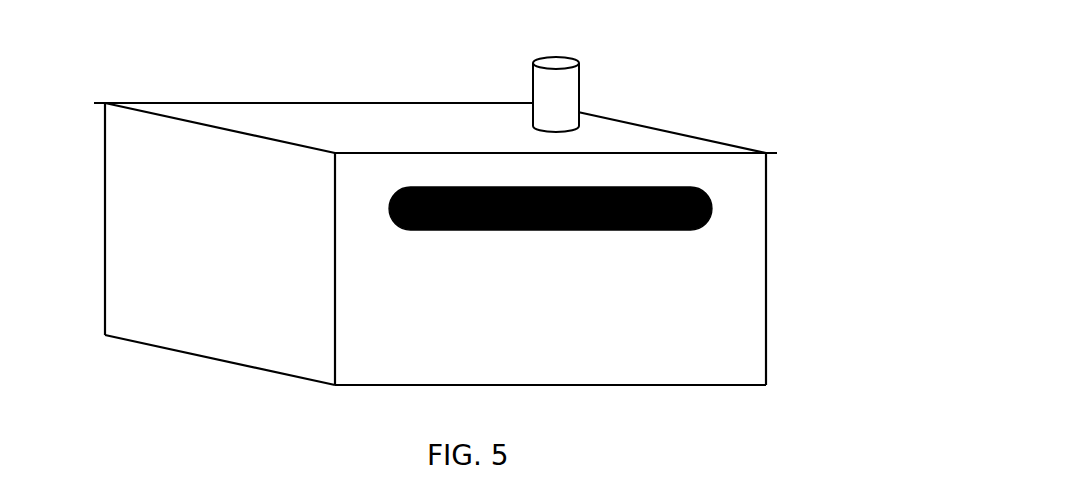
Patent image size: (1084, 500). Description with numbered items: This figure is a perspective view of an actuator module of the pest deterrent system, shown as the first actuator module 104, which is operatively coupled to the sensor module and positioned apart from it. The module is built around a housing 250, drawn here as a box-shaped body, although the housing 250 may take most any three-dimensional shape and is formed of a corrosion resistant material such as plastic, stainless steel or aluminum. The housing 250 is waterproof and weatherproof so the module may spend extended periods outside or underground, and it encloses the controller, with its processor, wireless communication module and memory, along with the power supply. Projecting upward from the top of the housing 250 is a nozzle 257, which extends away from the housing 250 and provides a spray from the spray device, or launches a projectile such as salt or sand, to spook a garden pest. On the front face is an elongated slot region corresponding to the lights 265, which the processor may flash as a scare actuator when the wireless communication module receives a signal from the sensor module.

The housing 250 is at (130, 95).
The nozzle 257 is at (590, 70).
The lights 265 is at (715, 207).
The first actuator module 104 is at (800, 103).